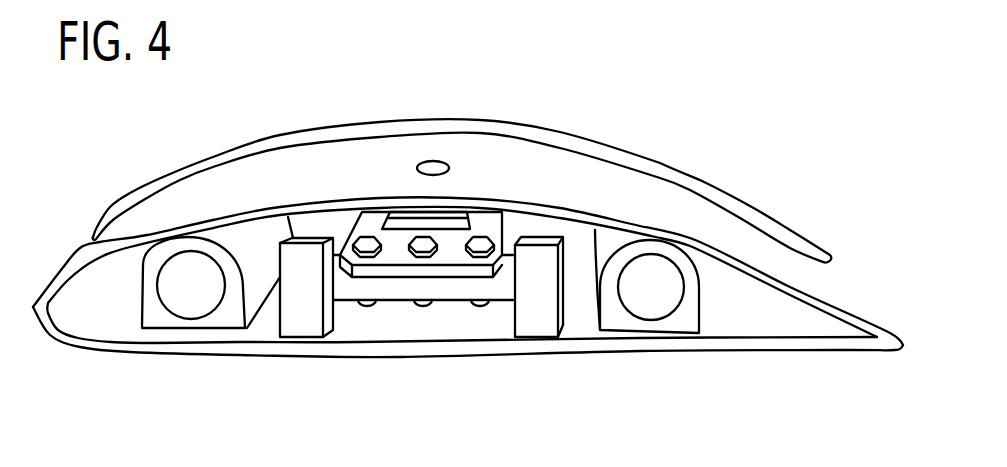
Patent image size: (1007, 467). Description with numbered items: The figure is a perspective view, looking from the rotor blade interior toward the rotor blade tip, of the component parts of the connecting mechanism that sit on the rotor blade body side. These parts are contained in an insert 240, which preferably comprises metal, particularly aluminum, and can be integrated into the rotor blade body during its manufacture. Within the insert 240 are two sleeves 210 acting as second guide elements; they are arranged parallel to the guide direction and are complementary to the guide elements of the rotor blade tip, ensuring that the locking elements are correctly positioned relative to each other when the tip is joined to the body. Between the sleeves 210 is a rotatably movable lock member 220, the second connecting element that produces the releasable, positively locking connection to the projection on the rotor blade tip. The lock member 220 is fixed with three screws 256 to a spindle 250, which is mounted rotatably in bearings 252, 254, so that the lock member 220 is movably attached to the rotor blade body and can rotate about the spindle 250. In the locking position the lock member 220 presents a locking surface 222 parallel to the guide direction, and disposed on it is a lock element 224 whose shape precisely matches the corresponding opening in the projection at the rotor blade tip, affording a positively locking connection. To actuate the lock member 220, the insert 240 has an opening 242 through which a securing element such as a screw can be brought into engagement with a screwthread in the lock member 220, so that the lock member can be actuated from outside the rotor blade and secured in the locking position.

The sleeves 210 is at (217, 320).
The lock member 220 is at (421, 243).
The locking surface 222 is at (400, 242).
The lock element 224 is at (457, 222).
The insert 240 is at (665, 95).
The opening 242 is at (433, 161).
The spindle 250 is at (402, 292).
The bearing 252 is at (300, 318).
The bearing 254 is at (538, 318).
The screws 256 is at (363, 254).